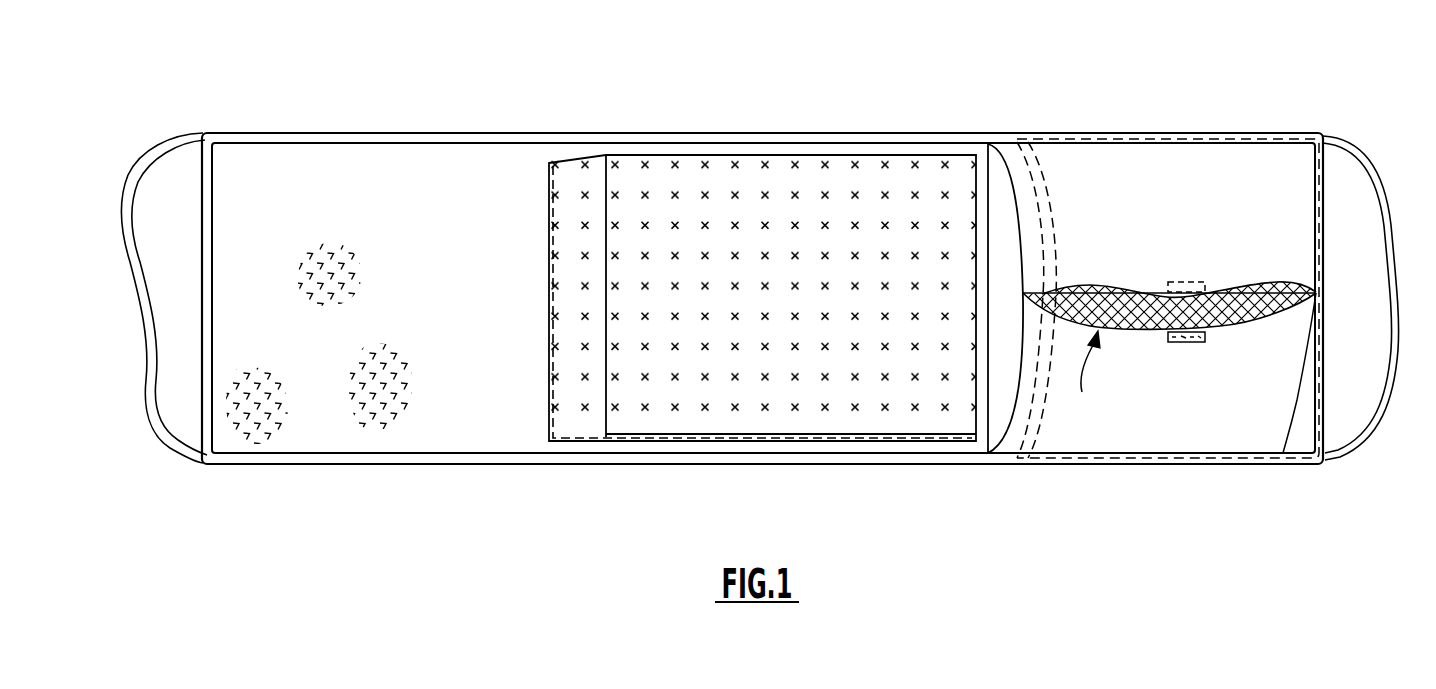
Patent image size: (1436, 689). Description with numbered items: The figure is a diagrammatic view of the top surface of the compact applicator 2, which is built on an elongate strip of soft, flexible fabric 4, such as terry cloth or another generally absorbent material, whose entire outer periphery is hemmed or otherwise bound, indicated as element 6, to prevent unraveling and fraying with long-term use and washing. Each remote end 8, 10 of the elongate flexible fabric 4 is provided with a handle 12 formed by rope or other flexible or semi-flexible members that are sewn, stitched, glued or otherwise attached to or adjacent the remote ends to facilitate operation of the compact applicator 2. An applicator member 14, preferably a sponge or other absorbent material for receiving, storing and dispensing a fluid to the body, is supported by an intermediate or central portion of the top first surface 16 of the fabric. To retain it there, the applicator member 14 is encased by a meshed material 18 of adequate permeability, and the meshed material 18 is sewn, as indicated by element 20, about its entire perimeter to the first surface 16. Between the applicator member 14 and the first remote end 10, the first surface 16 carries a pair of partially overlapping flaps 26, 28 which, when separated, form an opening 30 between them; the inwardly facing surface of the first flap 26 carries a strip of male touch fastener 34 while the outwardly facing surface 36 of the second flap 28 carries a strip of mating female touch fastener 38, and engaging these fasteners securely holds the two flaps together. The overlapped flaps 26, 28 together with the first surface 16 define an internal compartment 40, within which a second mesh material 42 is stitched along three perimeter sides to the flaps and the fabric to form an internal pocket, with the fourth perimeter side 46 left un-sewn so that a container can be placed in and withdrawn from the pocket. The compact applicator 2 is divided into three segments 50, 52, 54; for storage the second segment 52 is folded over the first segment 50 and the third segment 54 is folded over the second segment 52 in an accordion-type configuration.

The compact applicator 2 is at (532, 76).
The elongate flexible fabric 4 is at (293, 465).
The hem or binding 6 is at (1040, 458).
The remote end 8 is at (197, 408).
The first remote end 10 is at (1337, 410).
The handle 12 is at (133, 267).
The applicator member 14 is at (547, 390).
The top first surface 16 is at (387, 180).
The meshed material 18 is at (788, 180).
The sewing of meshed material 20 is at (551, 212).
The first flap 26 is at (1085, 187).
The second flap 28 is at (1157, 373).
The opening 30 is at (1104, 367).
The male touch fastener 34 is at (1183, 282).
The outwardly facing surface 36 is at (1253, 337).
The female touch fastener 38 is at (1194, 342).
The internal compartment 40 is at (1228, 287).
The second mesh material 42 is at (1122, 297).
The fourth un-sewn perimeter side 46 is at (1043, 165).
The first segment 50 is at (445, 405).
The second segment 52 is at (768, 440).
The third segment 54 is at (1247, 410).